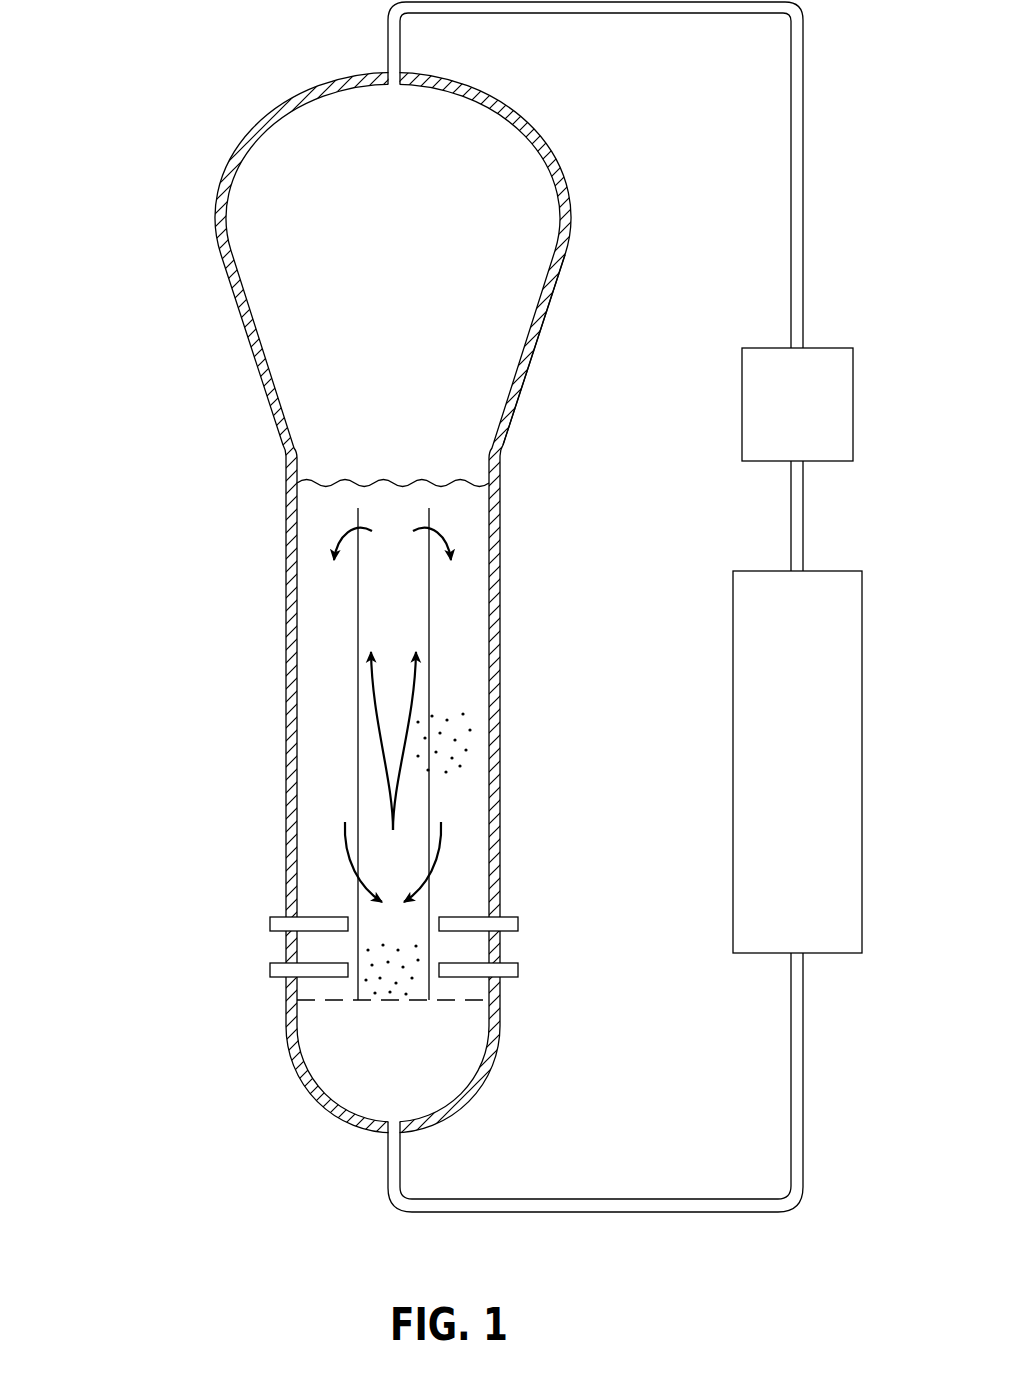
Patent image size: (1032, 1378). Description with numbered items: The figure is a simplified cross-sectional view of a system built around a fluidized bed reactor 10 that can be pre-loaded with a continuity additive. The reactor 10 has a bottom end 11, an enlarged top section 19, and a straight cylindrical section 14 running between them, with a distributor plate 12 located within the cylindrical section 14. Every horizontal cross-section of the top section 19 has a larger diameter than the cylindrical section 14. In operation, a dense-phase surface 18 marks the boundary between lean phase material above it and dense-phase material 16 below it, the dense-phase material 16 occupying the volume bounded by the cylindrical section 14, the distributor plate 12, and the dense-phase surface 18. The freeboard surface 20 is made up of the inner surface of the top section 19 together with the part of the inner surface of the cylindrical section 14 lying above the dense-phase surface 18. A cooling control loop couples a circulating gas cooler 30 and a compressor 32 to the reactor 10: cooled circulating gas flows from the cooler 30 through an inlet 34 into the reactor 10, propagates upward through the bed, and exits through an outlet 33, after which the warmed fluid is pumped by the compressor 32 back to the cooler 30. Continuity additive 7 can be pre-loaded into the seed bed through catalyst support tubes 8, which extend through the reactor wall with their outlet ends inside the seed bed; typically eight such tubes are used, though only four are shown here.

The fluidized bed reactor 10 is at (461, 607).
The top section 19 is at (393, 581).
The outlet 33 is at (393, 85).
The freeboard surface 20 is at (552, 280).
The dense-phase surface 18 is at (300, 485).
The cylindrical section 14 is at (401, 581).
The dense-phase material 16 is at (478, 742).
The catalyst support tubes 8 is at (272, 918).
The distributor plate 12 is at (343, 1002).
The continuity additive 7 is at (400, 987).
The inlet 34 is at (392, 1122).
The bottom end 11 is at (300, 1093).
The compressor 32 is at (742, 430).
The circulating gas cooler 30 is at (733, 924).